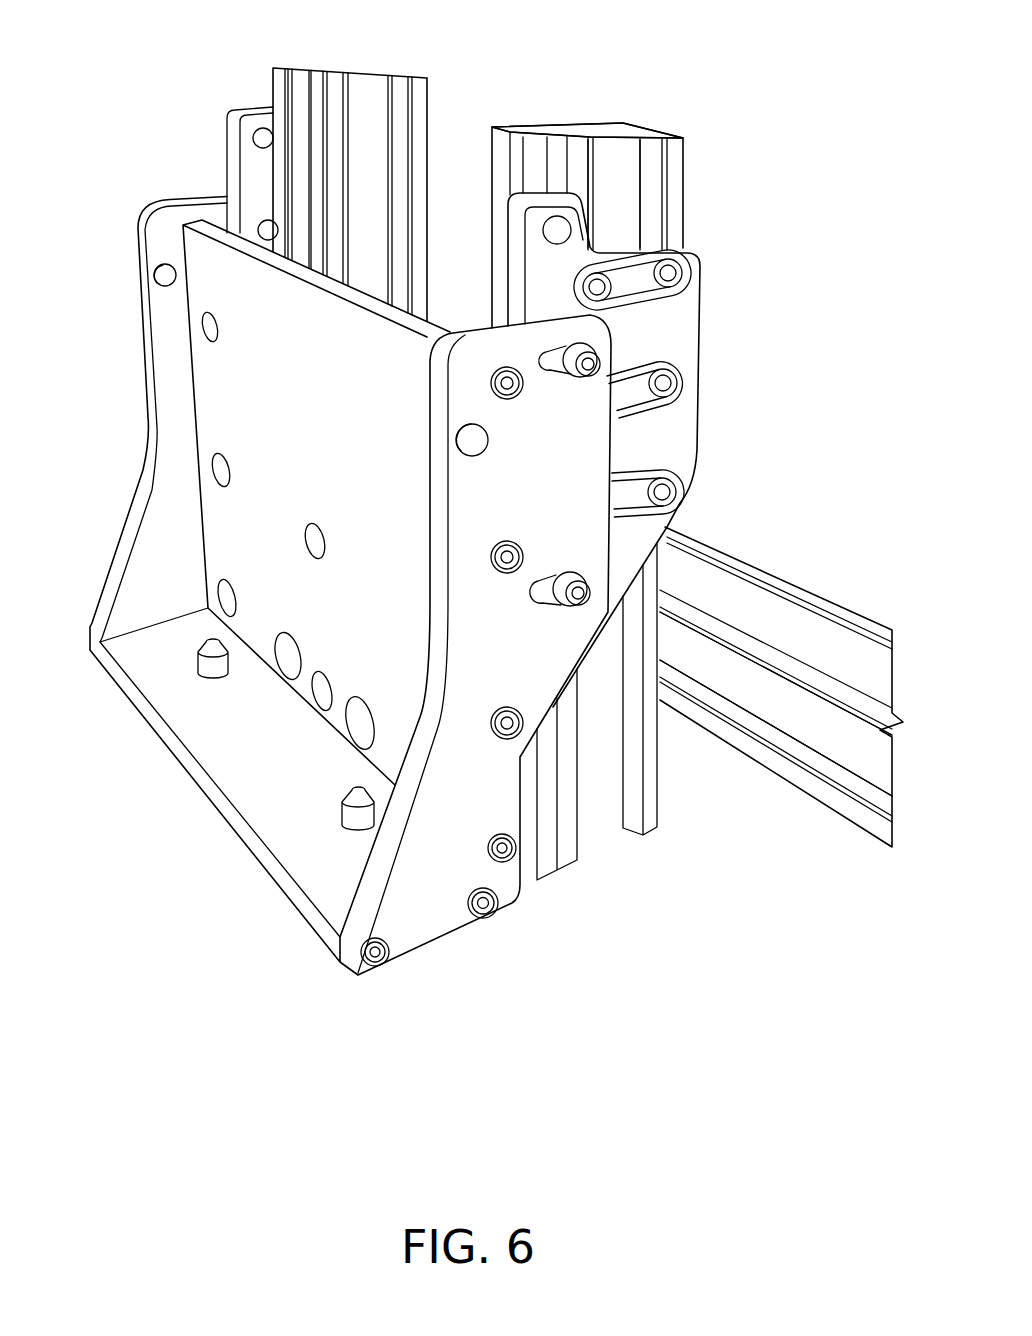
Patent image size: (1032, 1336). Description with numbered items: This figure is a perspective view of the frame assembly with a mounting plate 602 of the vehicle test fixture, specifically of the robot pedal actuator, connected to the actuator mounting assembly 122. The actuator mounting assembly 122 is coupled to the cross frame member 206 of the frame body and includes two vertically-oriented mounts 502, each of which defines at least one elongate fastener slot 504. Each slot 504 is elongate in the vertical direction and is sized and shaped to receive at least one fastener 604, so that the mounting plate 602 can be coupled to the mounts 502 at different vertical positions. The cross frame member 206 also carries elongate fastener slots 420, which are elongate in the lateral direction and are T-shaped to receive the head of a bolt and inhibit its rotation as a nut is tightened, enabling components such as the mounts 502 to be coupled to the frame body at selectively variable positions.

The actuator mounting assembly 122 is at (709, 136).
The cross frame member 206 is at (825, 808).
The elongate fastener slots 420 is at (770, 730).
The vertically-oriented mounts 502 is at (310, 95).
The elongate fastener slot 504 is at (648, 155).
The mounting plate 602 is at (124, 226).
The fastener 604 is at (683, 470).